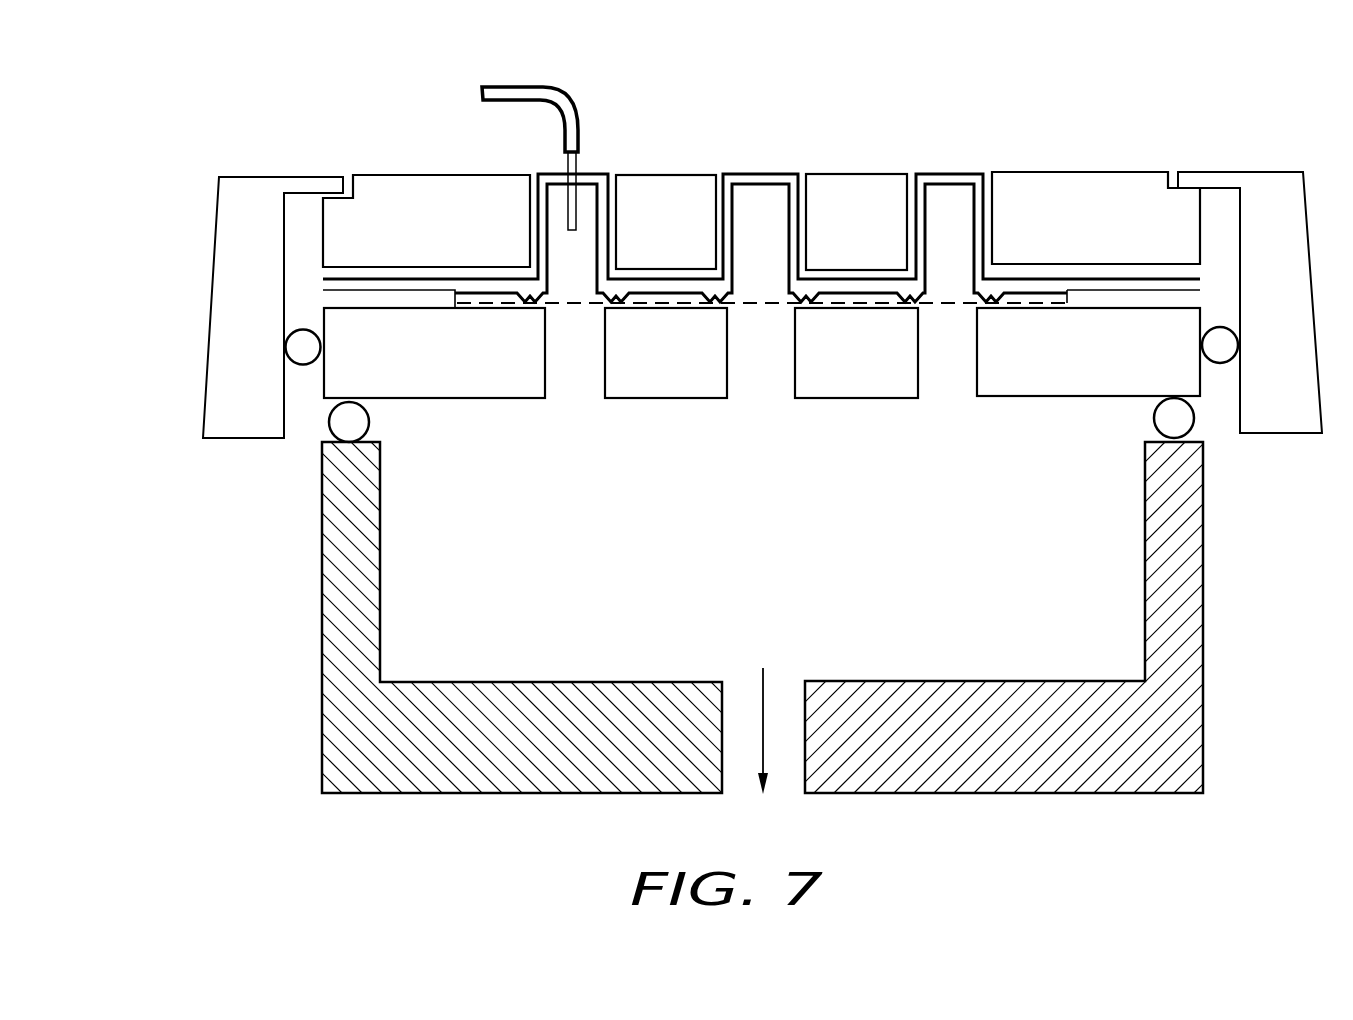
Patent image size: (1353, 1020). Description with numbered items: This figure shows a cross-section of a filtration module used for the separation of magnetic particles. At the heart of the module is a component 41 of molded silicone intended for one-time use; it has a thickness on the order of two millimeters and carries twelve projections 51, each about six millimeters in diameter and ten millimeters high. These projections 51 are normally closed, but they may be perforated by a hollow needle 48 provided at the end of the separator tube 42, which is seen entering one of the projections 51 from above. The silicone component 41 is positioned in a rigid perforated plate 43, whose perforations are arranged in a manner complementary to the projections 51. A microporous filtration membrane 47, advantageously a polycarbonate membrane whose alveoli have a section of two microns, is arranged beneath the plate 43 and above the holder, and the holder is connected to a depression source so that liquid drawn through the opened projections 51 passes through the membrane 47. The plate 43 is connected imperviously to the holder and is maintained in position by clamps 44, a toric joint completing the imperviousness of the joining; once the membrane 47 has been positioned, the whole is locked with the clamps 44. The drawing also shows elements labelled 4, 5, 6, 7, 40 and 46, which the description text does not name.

The right clamp member 4 is at (1272, 188).
The lower right roller 5 is at (1185, 387).
The upper right roller 6 is at (1198, 318).
The base 7 is at (1182, 572).
The lower left roller 40 is at (340, 390).
The component of molded silicone 41 is at (600, 178).
The separator tube 42 is at (570, 108).
The rigid perforated plate 43 is at (852, 180).
The clamps 44 is at (227, 313).
The upper left roller 46 is at (300, 350).
The microporous filtration membrane 47 is at (400, 300).
The hollow needle 48 is at (568, 167).
The projections 51 is at (947, 177).